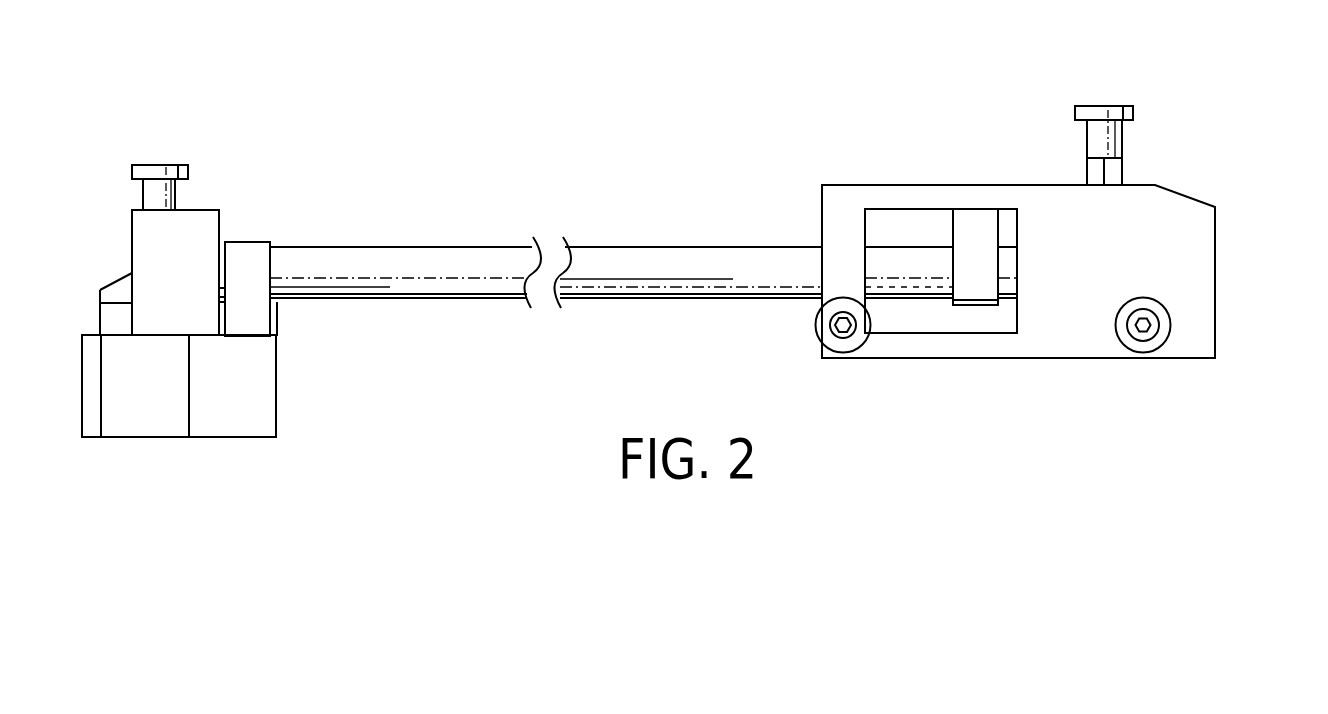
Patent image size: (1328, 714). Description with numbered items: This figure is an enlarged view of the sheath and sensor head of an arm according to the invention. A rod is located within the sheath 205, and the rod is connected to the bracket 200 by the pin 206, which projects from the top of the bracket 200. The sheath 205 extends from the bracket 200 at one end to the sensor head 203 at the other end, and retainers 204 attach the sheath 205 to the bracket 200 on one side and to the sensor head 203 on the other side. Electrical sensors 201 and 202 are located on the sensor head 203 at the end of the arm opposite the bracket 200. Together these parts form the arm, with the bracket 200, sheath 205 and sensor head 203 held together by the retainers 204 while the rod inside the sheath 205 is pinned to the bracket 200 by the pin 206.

The bracket 200 is at (1215, 220).
The electrical sensor 201 is at (237, 437).
The electrical sensor 202 is at (148, 437).
The sensor head 203 is at (95, 437).
The retainer 204 is at (252, 241).
The sheath 205 is at (691, 246).
The pin 206 is at (1107, 105).